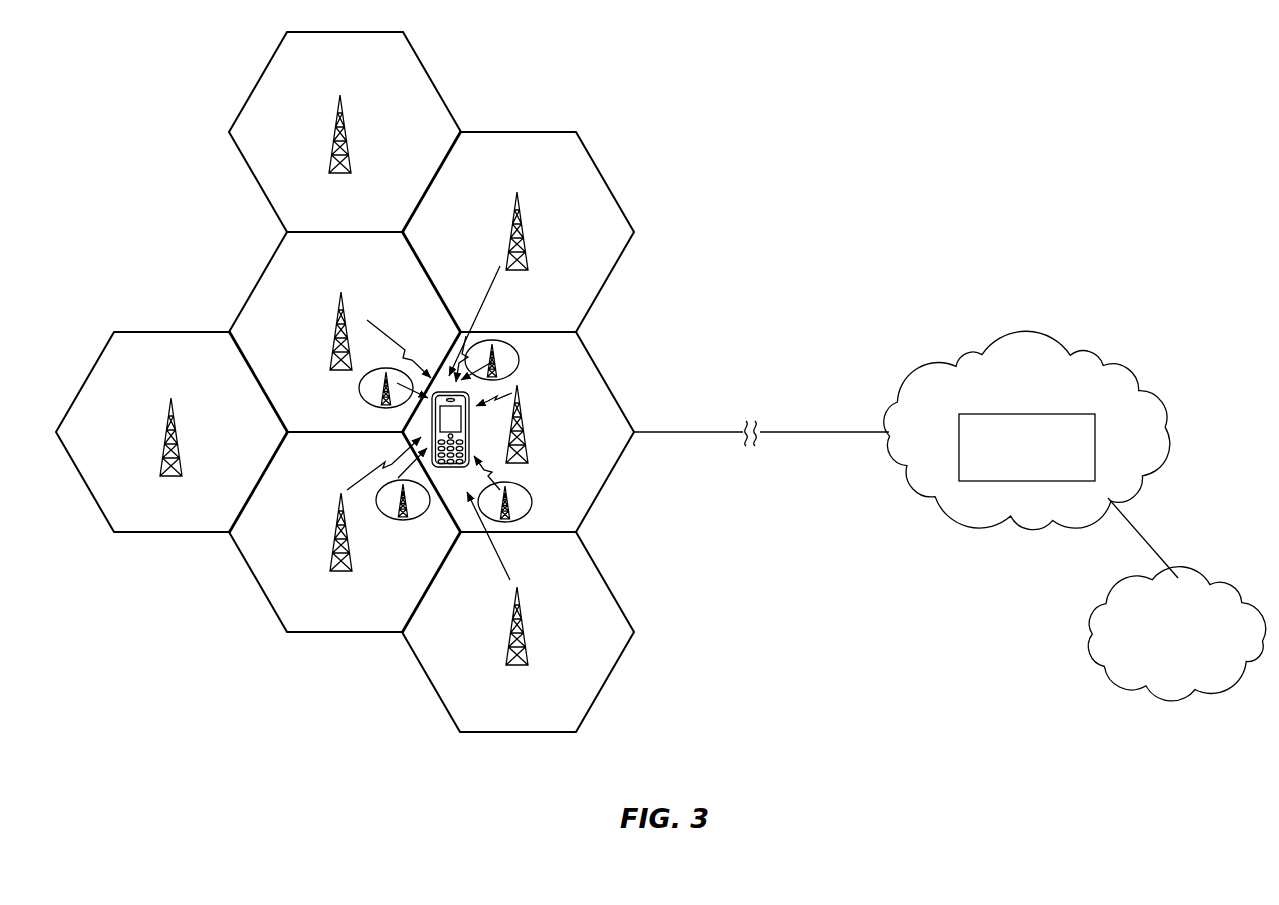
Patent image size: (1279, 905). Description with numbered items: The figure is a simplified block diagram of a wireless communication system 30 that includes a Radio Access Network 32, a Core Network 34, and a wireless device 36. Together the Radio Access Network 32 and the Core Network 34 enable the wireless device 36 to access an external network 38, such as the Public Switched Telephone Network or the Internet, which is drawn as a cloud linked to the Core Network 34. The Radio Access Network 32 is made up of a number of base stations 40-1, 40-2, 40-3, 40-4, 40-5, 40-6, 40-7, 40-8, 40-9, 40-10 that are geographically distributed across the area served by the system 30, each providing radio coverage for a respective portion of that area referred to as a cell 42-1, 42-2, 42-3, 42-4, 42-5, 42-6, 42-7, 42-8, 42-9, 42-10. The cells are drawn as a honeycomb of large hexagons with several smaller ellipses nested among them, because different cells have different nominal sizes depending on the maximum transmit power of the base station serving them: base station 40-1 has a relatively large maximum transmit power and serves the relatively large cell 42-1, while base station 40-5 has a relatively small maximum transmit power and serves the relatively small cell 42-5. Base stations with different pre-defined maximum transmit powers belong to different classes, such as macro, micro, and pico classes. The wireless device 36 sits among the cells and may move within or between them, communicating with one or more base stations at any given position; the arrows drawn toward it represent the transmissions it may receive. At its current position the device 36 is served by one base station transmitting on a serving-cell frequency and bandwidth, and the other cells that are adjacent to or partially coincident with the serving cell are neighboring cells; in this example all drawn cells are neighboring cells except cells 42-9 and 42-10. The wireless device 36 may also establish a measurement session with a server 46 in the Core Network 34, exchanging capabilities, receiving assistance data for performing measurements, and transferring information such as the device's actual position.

The wireless communication system 30 is at (680, 84).
The radio access network 32 is at (72, 229).
The core network 34 is at (1014, 403).
The wireless device 36 is at (454, 467).
The external network 38 is at (1163, 666).
The server 46 is at (1014, 468).
The base station 40-1 is at (337, 320).
The base station 40-2 is at (332, 562).
The base station 40-3 is at (522, 608).
The base station 40-4 is at (522, 215).
The base station 40-5 is at (522, 415).
The base station 40-6 is at (401, 508).
The base station 40-7 is at (500, 512).
The base station 40-8 is at (477, 365).
The base station 40-9 is at (346, 118).
The base station 40-10 is at (178, 420).
The cell 42-1 is at (268, 263).
The cell 42-2 is at (273, 613).
The cell 42-3 is at (606, 695).
The cell 42-4 is at (617, 197).
The cell 42-5 is at (621, 455).
The cell 42-6 is at (416, 520).
The cell 42-7 is at (530, 506).
The cell 42-8 is at (520, 366).
The cell 42-9 is at (248, 165).
The cell 42-10 is at (103, 520).